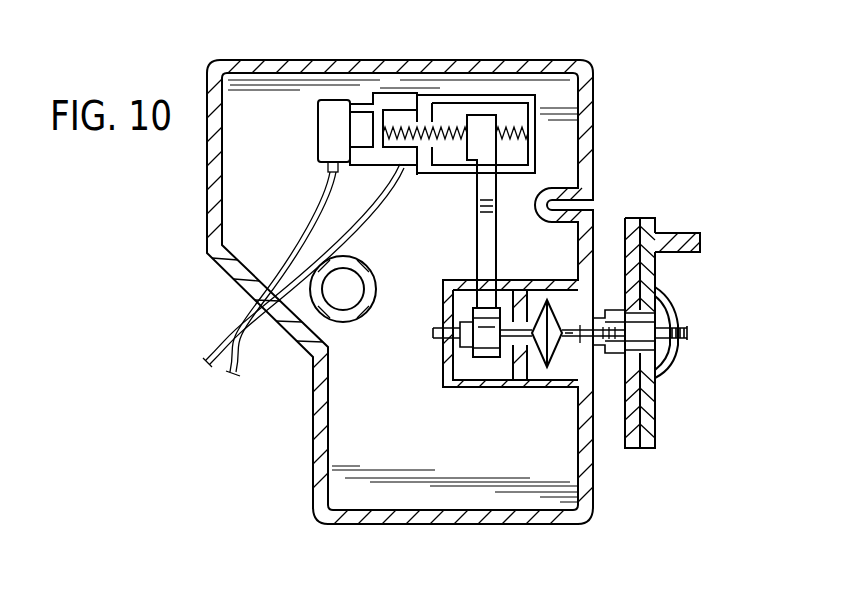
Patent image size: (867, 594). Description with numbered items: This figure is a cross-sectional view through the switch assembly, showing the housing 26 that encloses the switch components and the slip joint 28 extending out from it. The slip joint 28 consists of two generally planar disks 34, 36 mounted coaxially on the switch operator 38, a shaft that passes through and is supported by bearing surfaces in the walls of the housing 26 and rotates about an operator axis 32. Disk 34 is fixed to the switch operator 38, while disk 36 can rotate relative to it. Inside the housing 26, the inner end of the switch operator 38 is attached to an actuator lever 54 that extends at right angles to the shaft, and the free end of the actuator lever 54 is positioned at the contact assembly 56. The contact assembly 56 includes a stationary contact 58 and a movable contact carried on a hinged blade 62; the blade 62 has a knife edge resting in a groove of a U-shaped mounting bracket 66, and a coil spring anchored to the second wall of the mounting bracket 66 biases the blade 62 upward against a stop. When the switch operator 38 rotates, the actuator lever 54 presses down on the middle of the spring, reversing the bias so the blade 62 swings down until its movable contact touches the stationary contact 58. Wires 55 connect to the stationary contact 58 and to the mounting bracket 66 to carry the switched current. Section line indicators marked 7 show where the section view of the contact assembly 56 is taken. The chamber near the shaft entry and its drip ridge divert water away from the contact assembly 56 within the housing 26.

The housing 26 is at (447, 520).
The slip joint 28 is at (665, 329).
The operator axis 32 is at (727, 333).
The disk 34 is at (630, 452).
The disk 36 is at (654, 452).
The switch operator 38 is at (607, 318).
The actuator lever 54 is at (482, 233).
The wires 55 is at (240, 326).
The contact assembly 56 is at (533, 100).
The stationary contact 58 is at (333, 119).
The blade 62 is at (377, 100).
The mounting bracket 66 is at (472, 96).
The section line 7- 7 is at (566, 133).